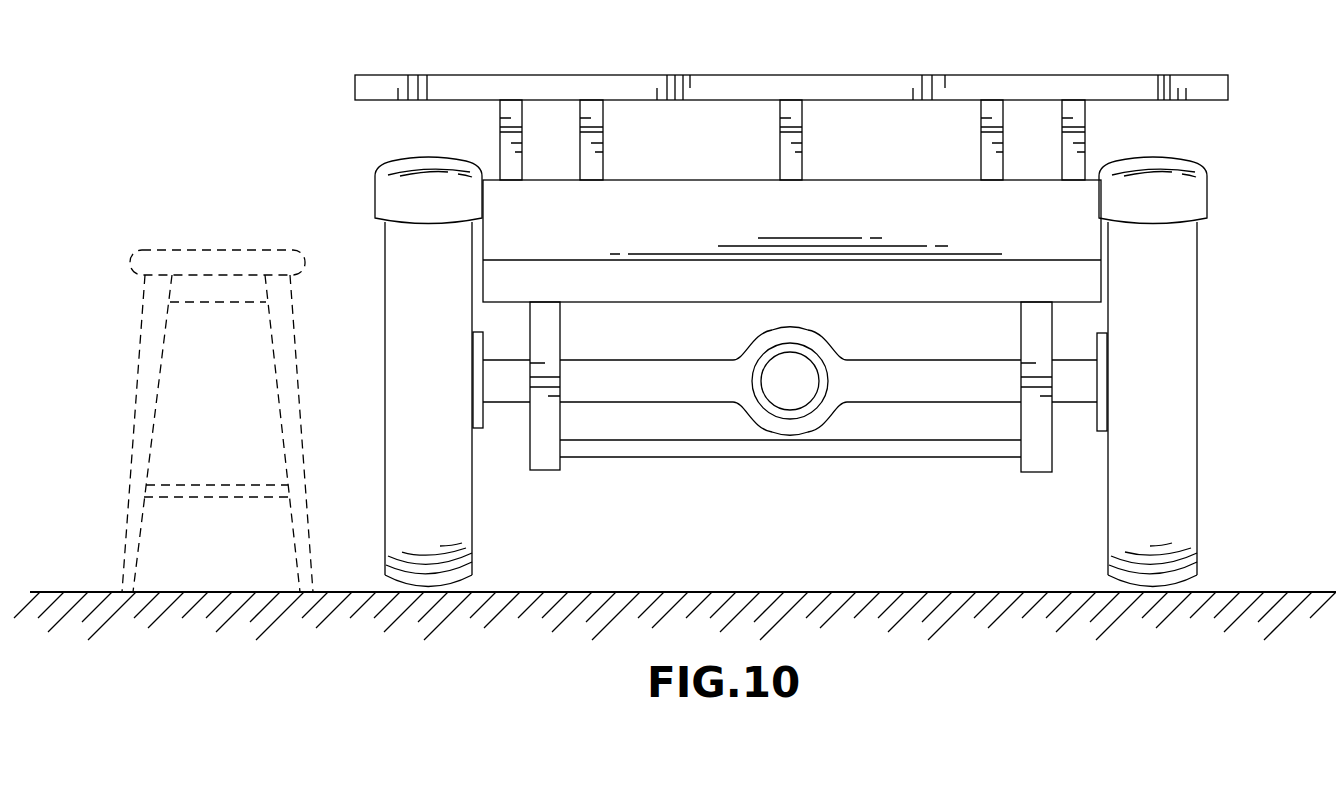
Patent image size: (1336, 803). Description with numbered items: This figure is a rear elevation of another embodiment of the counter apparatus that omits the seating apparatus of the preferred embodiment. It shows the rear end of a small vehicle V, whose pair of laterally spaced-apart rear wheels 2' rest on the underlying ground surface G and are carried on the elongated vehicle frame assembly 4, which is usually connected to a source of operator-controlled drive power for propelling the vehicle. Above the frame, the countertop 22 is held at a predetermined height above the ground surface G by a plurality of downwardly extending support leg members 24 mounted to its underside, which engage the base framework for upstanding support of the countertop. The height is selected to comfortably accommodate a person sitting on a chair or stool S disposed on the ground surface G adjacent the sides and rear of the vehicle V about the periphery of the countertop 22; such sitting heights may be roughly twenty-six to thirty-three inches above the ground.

The countertop 22 is at (866, 85).
The support leg members 24 is at (500, 128).
The rear wheels 2' is at (789, 372).
The vehicle frame assembly 4 is at (545, 470).
The vehicle V is at (772, 480).
The ground surface G is at (898, 592).
The stool S is at (218, 250).